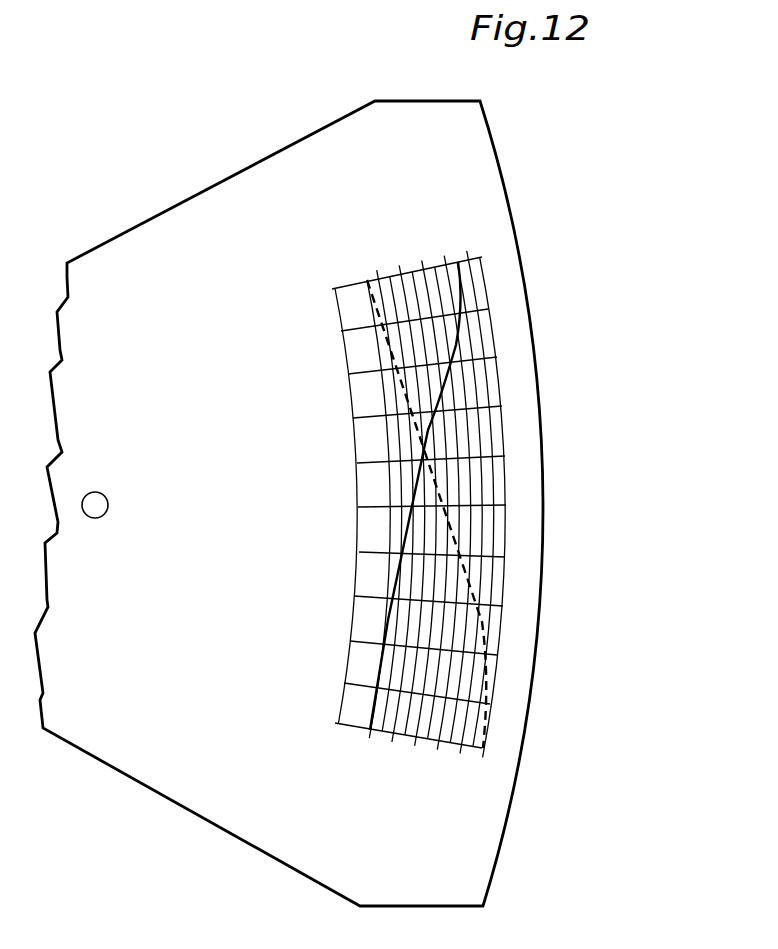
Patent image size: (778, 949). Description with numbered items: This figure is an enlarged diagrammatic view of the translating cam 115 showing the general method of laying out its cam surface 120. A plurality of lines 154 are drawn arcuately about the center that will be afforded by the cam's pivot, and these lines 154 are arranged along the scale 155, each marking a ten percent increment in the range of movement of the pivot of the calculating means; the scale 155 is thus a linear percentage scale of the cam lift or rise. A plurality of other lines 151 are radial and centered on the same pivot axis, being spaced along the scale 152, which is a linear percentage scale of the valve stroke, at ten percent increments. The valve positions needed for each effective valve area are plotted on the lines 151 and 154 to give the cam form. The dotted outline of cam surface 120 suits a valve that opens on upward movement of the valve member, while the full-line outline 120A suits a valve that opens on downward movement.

The translating cam 115 is at (302, 865).
The radial lines 151 is at (498, 553).
The arcuate lines 154 is at (503, 386).
The cam lift scale 155 is at (473, 242).
The valve stroke scale 152 is at (318, 683).
The cam surface outline 120A is at (461, 346).
The cam surface 120 is at (482, 623).